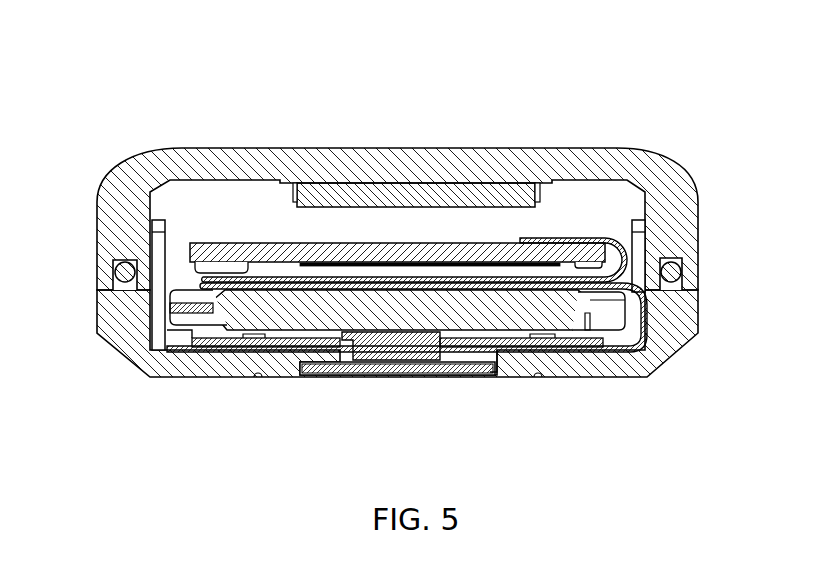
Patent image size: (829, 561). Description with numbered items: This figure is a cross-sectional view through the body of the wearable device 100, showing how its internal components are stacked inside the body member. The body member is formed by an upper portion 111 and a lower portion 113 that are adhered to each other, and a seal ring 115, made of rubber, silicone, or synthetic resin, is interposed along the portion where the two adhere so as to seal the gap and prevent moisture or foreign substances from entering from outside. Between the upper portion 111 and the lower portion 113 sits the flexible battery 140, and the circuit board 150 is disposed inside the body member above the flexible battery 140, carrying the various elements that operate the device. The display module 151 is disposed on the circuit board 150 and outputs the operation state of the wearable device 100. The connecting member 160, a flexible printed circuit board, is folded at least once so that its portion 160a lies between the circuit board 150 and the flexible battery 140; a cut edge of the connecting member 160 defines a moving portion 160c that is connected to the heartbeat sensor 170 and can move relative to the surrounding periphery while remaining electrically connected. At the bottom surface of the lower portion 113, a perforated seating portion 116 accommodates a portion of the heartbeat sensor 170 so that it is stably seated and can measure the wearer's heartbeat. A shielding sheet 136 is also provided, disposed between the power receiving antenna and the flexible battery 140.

The wearable device 100 is at (178, 98).
The upper portion 111 is at (640, 151).
The lower portion 113 is at (690, 330).
The seal ring 115 is at (114, 268).
The seating portion 116 is at (406, 374).
The shielding sheet 136 is at (555, 361).
The flexible battery 140 is at (235, 327).
The circuit board 150 is at (460, 244).
The display module 151 is at (418, 190).
The connecting member 160 is at (650, 243).
The portion of the connecting member 160a is at (330, 273).
The moving portion 160c is at (265, 346).
The heartbeat sensor 170 is at (380, 356).